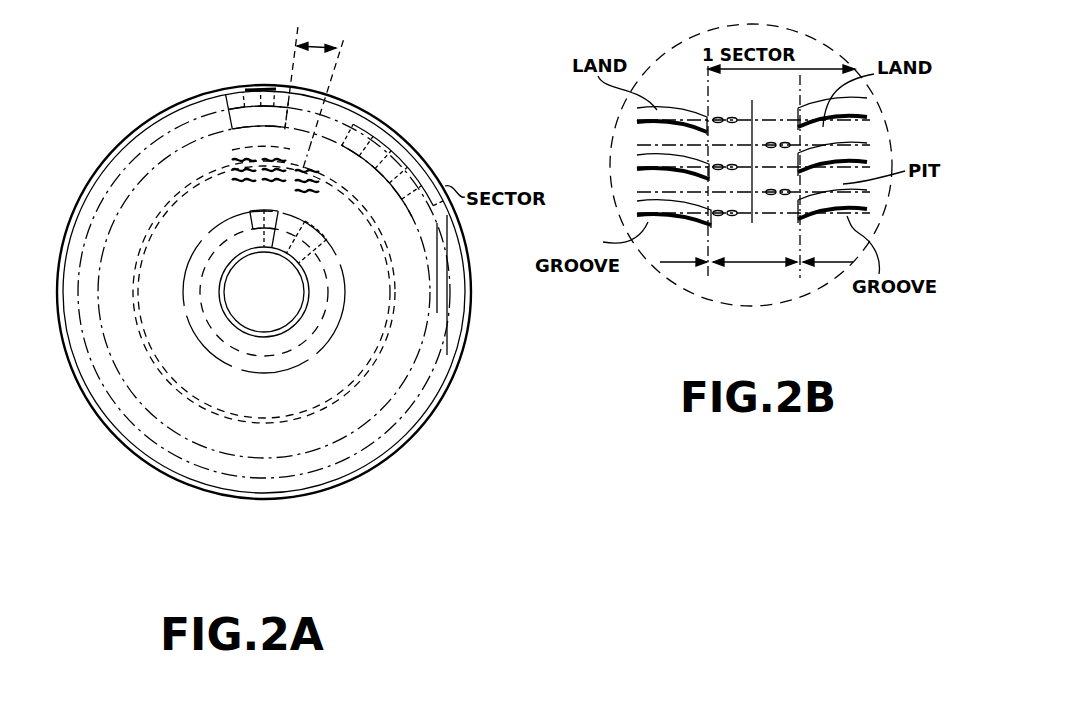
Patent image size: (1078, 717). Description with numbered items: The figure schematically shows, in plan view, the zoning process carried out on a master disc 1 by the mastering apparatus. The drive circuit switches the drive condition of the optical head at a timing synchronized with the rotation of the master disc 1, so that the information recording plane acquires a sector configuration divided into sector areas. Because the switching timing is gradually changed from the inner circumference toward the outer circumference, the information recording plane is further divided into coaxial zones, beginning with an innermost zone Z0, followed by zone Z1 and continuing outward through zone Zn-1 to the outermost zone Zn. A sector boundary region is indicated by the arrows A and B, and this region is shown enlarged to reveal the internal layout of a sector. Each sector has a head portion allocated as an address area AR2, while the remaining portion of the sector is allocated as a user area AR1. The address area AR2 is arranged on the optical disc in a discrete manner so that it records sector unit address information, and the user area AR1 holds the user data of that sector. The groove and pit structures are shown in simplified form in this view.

In FIG. 2A, the master disc 1 is at (447, 395).
In FIG. 2A, the innermost coaxial zone Z0 is at (277, 347).
In FIG. 2A, the second coaxial zone Z1 is at (232, 360).
In FIG. 2A, the second-to-outermost coaxial zone Zn-1 is at (428, 313).
In FIG. 2A, the outermost coaxial zone Zn is at (440, 357).
In FIG. 2A, the arrow indicating enlarged sector boundary A is at (272, 157).
In FIG. 2A, the arrow indicating enlarged sector boundary B is at (258, 92).
In FIG. 2B, the user area AR1 is at (756, 253).
In FIG. 2B, the address area AR2 is at (755, 253).